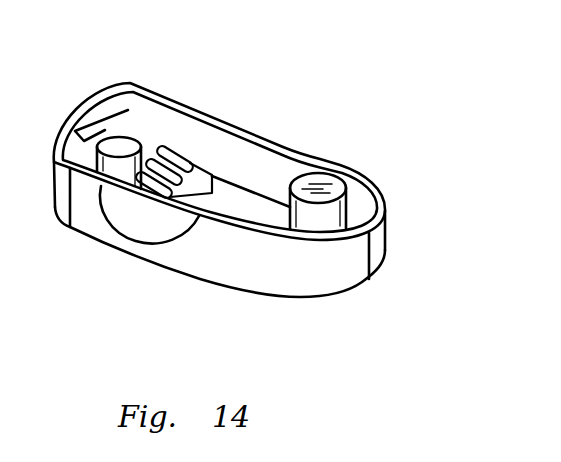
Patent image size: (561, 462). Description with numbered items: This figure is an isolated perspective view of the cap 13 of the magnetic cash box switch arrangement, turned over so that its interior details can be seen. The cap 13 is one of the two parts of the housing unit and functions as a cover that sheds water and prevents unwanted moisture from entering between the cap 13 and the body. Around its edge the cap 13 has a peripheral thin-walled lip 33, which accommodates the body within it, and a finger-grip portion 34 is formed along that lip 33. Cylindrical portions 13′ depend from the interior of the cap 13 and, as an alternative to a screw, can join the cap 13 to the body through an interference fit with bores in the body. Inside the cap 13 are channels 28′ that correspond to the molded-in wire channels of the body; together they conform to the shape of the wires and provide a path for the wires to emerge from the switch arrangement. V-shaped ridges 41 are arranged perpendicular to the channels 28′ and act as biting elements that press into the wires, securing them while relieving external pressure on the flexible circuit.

The cap 13 is at (349, 275).
The cylindrical portion 13′ is at (339, 182).
The channels 28′ is at (183, 162).
The peripheral thin-walled lip 33 is at (281, 145).
The finger-grip portion 34 is at (150, 225).
The V-shaped ridges 41 is at (178, 184).